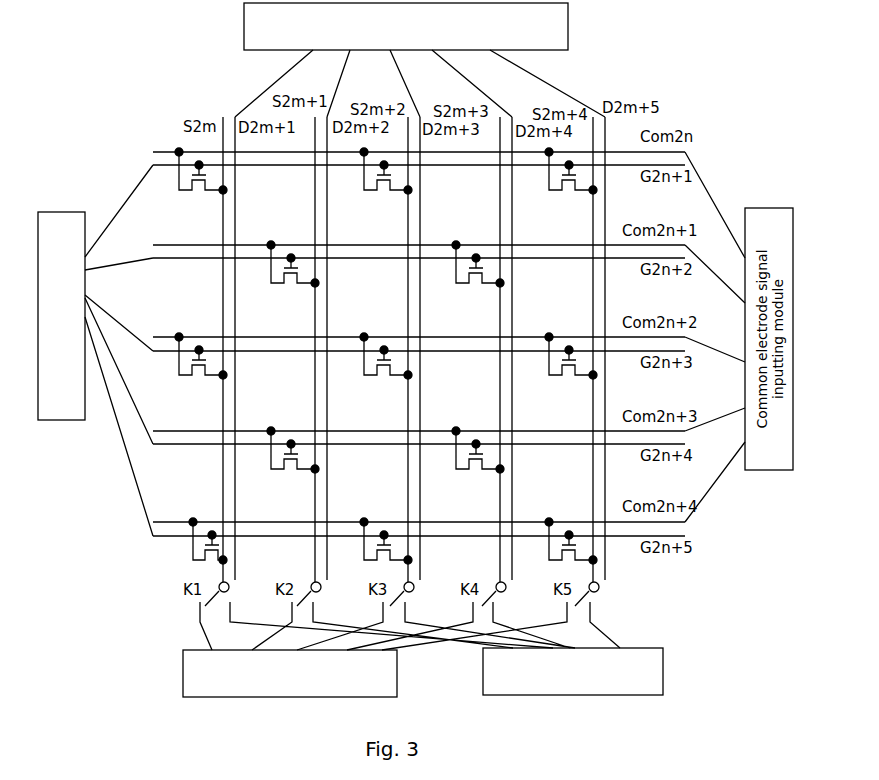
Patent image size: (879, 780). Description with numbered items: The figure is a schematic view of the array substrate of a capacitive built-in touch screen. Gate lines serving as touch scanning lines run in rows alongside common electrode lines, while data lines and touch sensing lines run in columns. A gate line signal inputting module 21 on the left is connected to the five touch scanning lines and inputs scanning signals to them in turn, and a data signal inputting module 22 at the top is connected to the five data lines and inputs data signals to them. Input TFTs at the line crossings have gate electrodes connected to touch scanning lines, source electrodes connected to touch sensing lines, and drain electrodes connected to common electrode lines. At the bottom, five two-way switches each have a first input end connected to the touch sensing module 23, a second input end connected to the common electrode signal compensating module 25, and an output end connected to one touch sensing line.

The gate line signal inputting module 21 is at (99, 190).
The data signal inputting module 22 is at (607, 13).
The touch sensing module 23 is at (663, 668).
The common electrode signal compensating module 25 is at (183, 670).